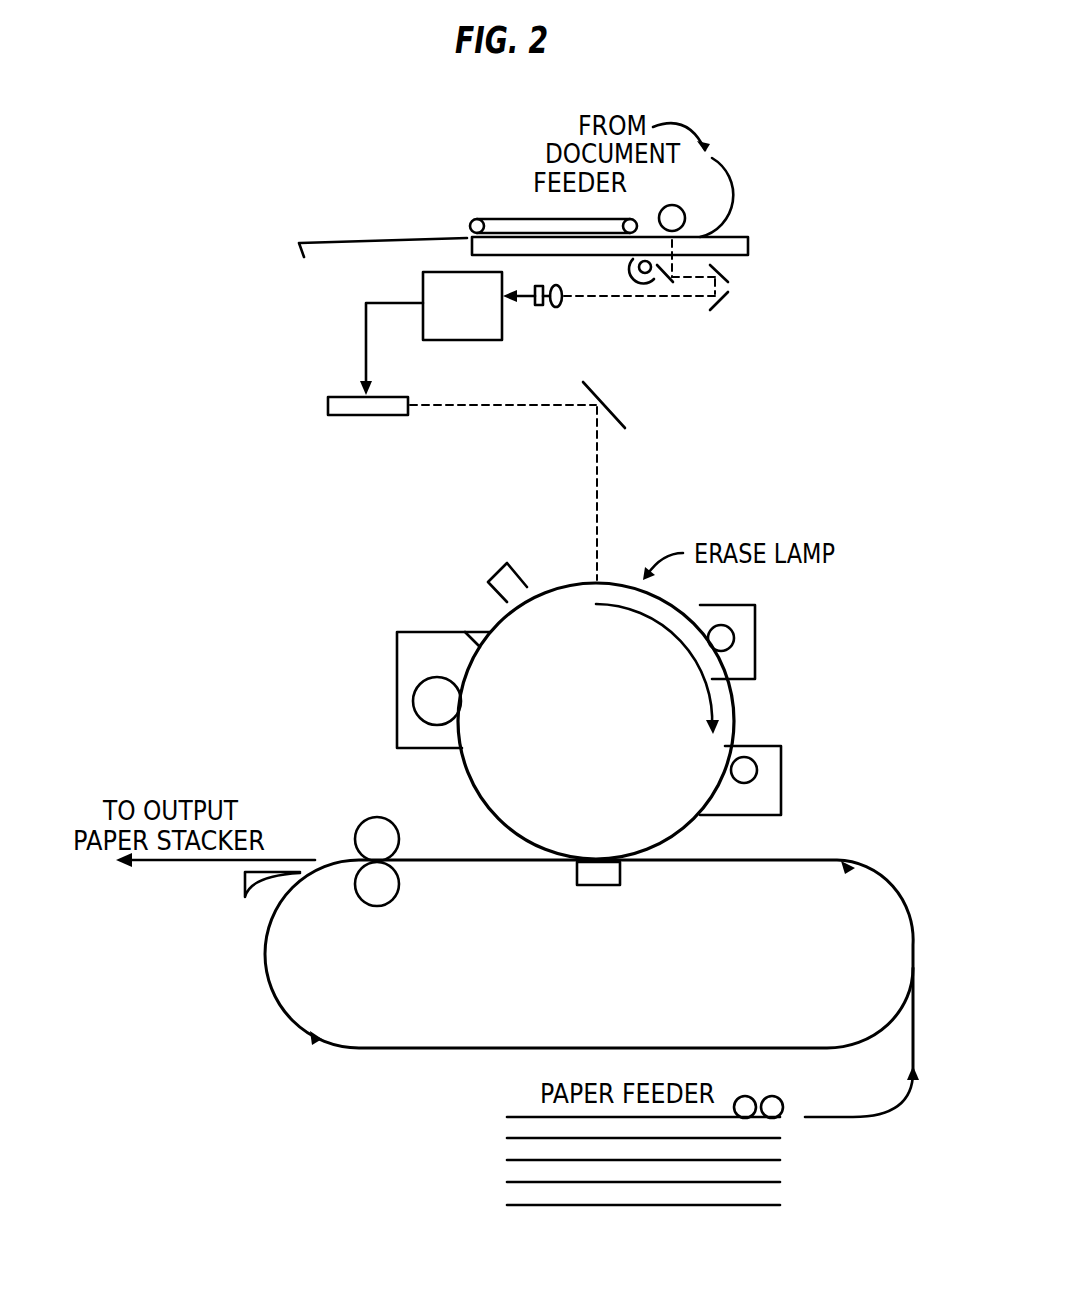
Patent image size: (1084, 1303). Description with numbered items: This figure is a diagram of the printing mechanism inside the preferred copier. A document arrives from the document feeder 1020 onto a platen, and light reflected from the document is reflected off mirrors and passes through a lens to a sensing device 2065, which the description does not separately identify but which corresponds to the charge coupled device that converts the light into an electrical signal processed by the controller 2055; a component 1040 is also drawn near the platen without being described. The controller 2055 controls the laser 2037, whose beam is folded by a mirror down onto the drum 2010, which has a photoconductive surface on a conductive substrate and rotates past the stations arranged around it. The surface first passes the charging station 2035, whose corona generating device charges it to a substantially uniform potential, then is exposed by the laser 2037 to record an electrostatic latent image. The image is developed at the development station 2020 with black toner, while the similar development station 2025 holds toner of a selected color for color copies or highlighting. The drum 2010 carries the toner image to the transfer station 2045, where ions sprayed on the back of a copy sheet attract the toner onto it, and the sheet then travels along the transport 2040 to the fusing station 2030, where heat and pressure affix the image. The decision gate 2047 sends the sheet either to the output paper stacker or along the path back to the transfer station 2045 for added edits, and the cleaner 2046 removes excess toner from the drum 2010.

The document feeder roller 1020 is at (666, 199).
The document output tray 1040 is at (337, 258).
The drum 2010 is at (734, 710).
The development station 2020 is at (755, 618).
The development station 2025 is at (781, 748).
The fusing station 2030 is at (400, 840).
The charging station 2035 is at (497, 570).
The laser 2037 is at (343, 415).
The transport 2040 is at (455, 862).
The transfer station 2045 is at (620, 872).
The cleaner 2046 is at (397, 654).
The decision gate 2047 is at (236, 876).
The controller 2055 is at (455, 340).
The image sensor lens 2065 is at (538, 306).